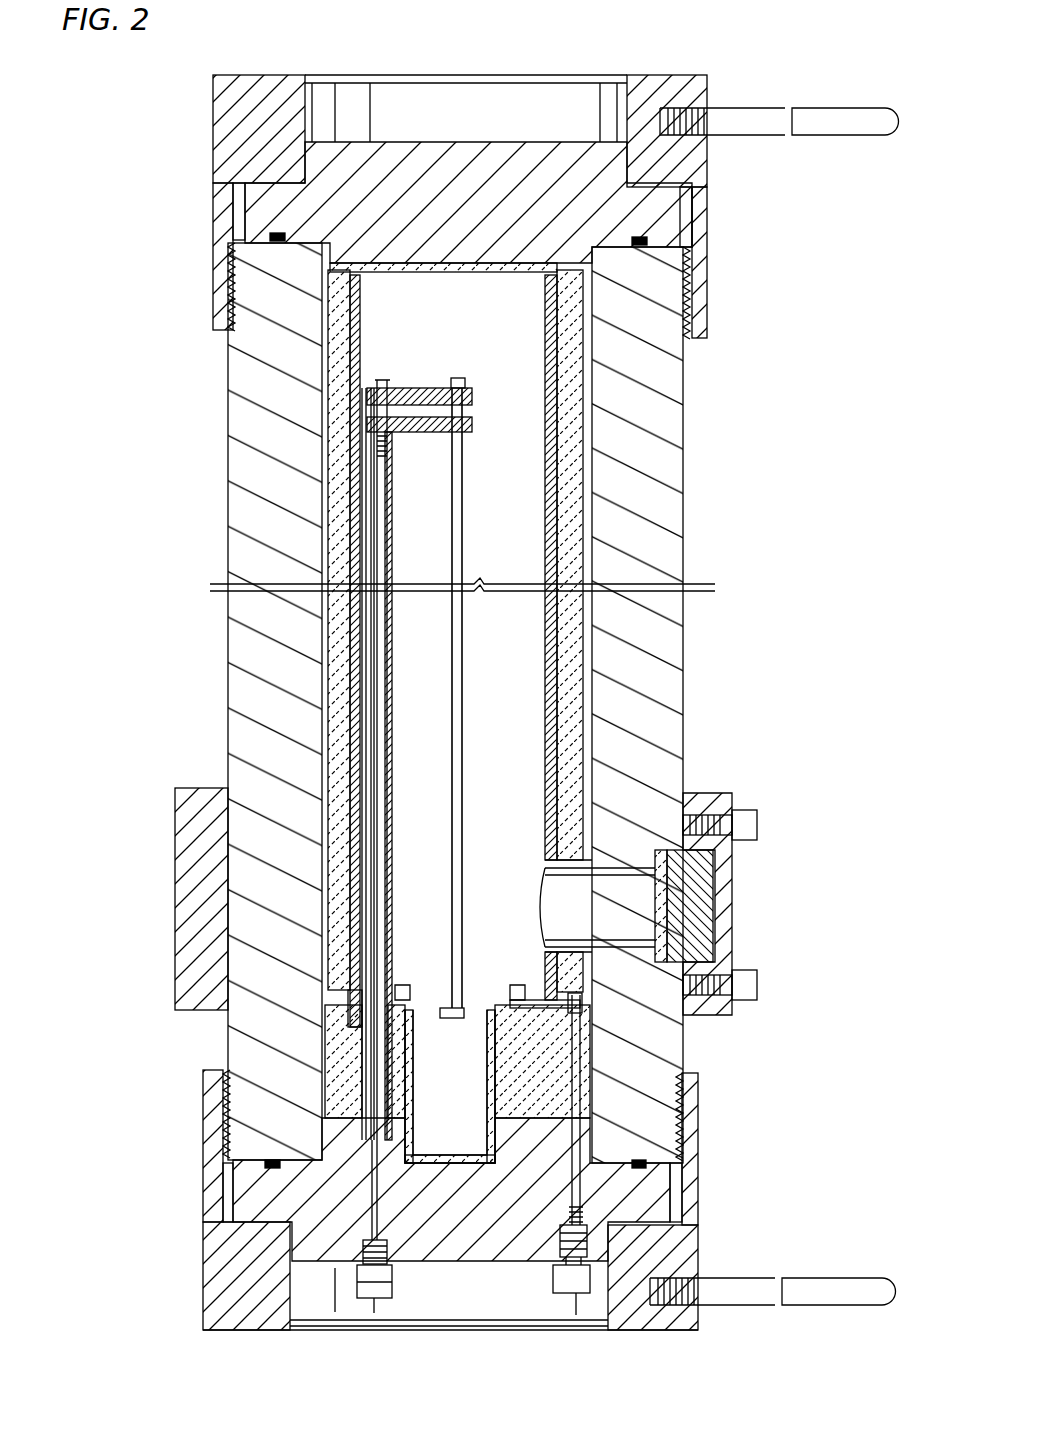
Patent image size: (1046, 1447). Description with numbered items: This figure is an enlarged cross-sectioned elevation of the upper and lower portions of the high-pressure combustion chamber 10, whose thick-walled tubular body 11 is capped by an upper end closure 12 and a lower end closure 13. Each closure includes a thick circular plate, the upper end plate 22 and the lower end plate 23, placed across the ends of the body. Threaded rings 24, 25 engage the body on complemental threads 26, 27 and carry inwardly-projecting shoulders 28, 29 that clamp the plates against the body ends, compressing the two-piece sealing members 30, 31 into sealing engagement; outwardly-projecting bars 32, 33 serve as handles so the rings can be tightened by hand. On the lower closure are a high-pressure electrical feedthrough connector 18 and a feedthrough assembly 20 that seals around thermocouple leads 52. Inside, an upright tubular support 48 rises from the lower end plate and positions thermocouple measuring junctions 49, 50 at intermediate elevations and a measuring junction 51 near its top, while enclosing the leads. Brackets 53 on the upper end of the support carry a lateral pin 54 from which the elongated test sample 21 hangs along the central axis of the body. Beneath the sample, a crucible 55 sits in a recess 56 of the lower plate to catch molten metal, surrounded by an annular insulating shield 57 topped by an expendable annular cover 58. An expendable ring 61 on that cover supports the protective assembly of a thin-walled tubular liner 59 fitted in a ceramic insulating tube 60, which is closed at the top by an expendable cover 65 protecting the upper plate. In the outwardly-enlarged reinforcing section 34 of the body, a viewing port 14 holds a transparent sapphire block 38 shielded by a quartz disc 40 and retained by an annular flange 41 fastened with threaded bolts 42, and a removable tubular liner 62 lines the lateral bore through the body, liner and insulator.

The combustion chamber 10 is at (185, 490).
The thick-walled tubular body 11 is at (680, 413).
The upper end closure 12 is at (195, 178).
The lower end closure 13 is at (190, 1257).
The viewing port 14 is at (722, 775).
The high-pressure electrical feedthrough connector 18 is at (570, 1290).
The high-pressure feedthrough assembly 20 is at (392, 1285).
The test sample 21 is at (463, 705).
The upper end plate 22 is at (452, 157).
The lower end plate 23 is at (465, 1250).
The upper threaded ring 24 is at (705, 183).
The lower threaded ring 25 is at (698, 1205).
The upper threads 26 is at (700, 325).
The lower threads 27 is at (225, 1095).
The upper inwardly-projecting shoulder 28 is at (235, 247).
The lower inwardly-projecting shoulder 29 is at (660, 1160).
The upper sealing member 30 is at (650, 255).
The lower sealing member 31 is at (265, 1160).
The outwardly-projecting bar 32 is at (843, 104).
The outwardly-projecting bar 33 is at (843, 1278).
The reinforcing section 34 is at (178, 828).
The transparent block 38 is at (700, 918).
The quartz disc 40 is at (670, 885).
The annular flange 41 is at (730, 1005).
The threaded bolt 42 is at (745, 815).
The tubular support 48 is at (392, 913).
The measuring junction 49 is at (392, 812).
The measuring junction 50 is at (395, 663).
The measuring junction 51 is at (395, 493).
The thermocouple lead 52 is at (365, 1305).
The bracket 53 is at (417, 388).
The lateral pin 54 is at (470, 386).
The crucible 55 is at (492, 1068).
The recess 56 is at (500, 1160).
The insulating shield 57 is at (545, 1075).
The annular cover 58 is at (540, 1025).
The tubular liner 59 is at (548, 535).
The insulating tube 60 is at (577, 520).
The expendable ring 61 is at (355, 997).
The tubular liner 62 is at (545, 883).
The expendable cover 65 is at (445, 268).